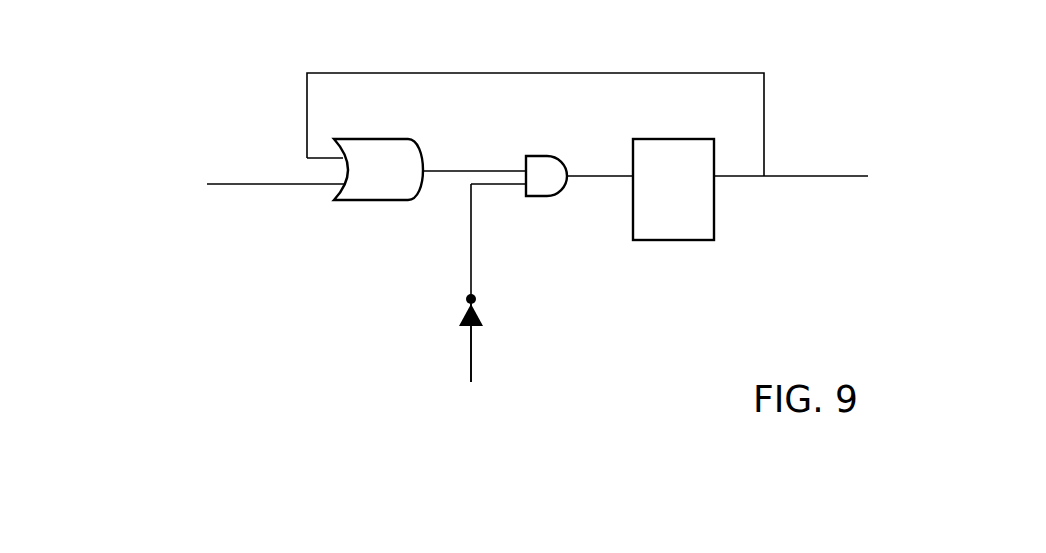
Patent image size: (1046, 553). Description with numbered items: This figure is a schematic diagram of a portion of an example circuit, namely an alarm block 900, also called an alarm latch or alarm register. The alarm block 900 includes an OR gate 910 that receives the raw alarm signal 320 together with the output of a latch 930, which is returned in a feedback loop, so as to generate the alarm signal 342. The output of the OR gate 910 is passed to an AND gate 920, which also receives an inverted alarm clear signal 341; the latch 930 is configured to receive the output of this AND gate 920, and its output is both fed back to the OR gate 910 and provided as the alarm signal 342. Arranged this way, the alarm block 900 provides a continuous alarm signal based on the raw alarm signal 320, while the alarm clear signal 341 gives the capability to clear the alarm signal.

The alarm block 900 is at (184, 53).
The raw alarm signal 320 is at (253, 185).
The OR gate 910 is at (369, 200).
The AND gate 920 is at (537, 155).
The latch 930 is at (716, 220).
The alarm signal 342 is at (808, 176).
The alarm clear signal 341 is at (474, 348).